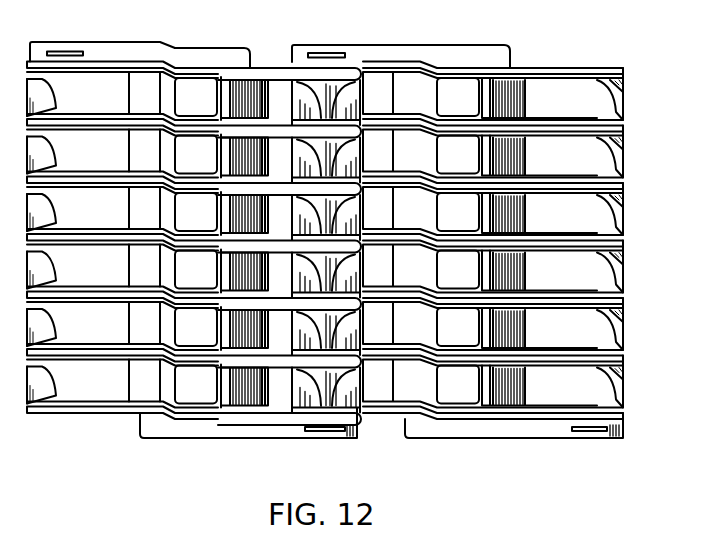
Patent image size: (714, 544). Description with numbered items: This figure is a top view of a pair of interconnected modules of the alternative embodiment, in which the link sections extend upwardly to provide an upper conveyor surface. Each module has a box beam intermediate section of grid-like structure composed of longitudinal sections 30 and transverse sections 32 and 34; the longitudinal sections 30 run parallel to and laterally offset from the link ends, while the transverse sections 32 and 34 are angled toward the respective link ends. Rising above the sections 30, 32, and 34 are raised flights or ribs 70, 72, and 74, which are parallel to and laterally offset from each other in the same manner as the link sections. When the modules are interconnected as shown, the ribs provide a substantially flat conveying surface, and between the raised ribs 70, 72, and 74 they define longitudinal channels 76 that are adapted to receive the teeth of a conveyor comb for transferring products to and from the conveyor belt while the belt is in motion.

The longitudinal section 30 is at (192, 137).
The transverse section 32 is at (167, 97).
The transverse section 34 is at (222, 97).
The raised rib 70 is at (104, 62).
The raised rib 72 is at (193, 67).
The raised rib 74 is at (268, 72).
The longitudinal channel 76 is at (592, 115).